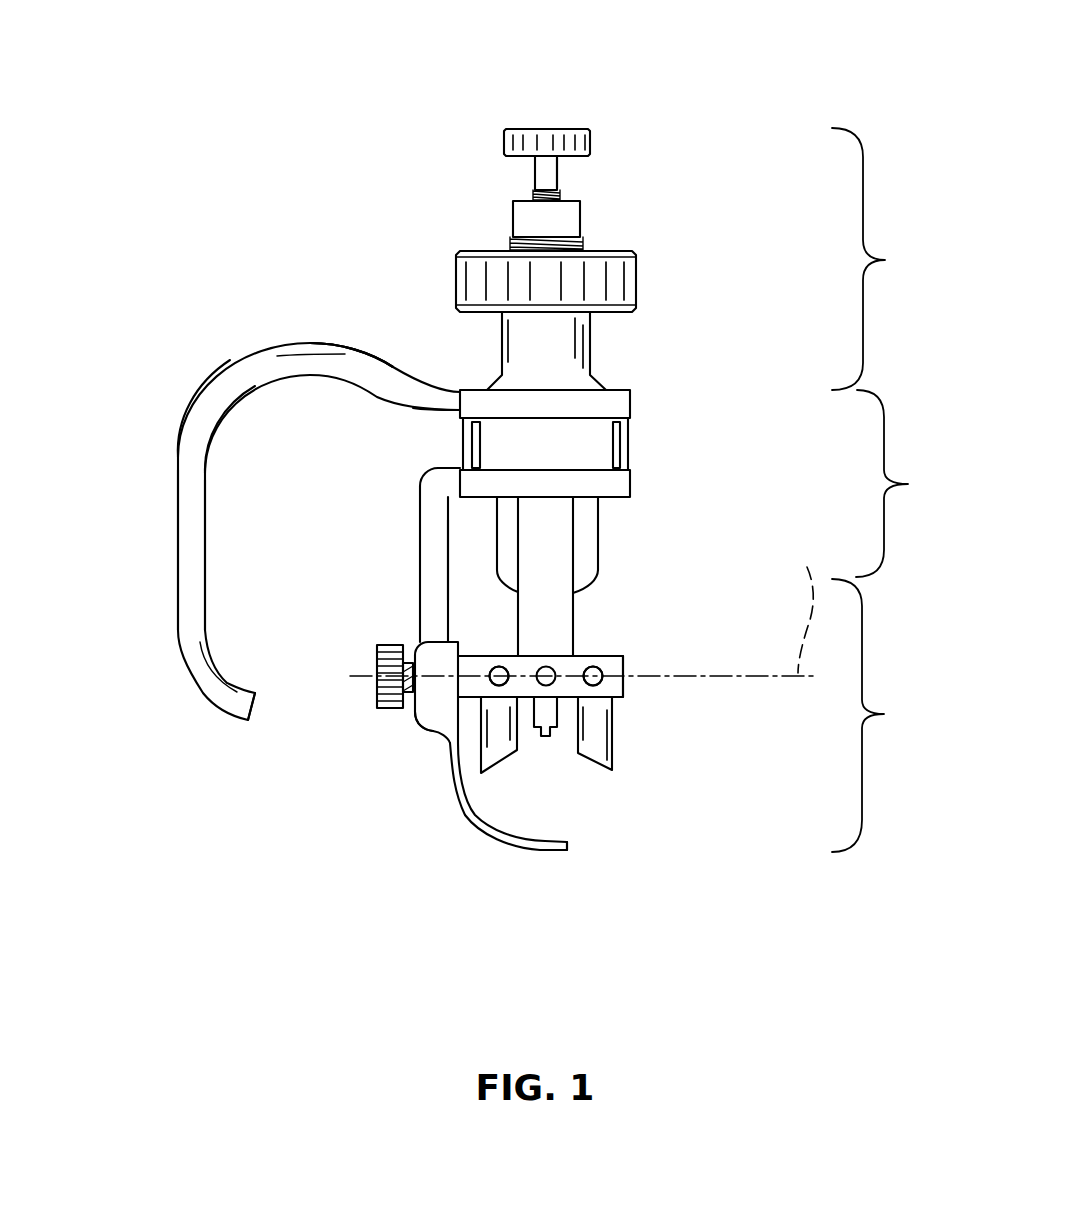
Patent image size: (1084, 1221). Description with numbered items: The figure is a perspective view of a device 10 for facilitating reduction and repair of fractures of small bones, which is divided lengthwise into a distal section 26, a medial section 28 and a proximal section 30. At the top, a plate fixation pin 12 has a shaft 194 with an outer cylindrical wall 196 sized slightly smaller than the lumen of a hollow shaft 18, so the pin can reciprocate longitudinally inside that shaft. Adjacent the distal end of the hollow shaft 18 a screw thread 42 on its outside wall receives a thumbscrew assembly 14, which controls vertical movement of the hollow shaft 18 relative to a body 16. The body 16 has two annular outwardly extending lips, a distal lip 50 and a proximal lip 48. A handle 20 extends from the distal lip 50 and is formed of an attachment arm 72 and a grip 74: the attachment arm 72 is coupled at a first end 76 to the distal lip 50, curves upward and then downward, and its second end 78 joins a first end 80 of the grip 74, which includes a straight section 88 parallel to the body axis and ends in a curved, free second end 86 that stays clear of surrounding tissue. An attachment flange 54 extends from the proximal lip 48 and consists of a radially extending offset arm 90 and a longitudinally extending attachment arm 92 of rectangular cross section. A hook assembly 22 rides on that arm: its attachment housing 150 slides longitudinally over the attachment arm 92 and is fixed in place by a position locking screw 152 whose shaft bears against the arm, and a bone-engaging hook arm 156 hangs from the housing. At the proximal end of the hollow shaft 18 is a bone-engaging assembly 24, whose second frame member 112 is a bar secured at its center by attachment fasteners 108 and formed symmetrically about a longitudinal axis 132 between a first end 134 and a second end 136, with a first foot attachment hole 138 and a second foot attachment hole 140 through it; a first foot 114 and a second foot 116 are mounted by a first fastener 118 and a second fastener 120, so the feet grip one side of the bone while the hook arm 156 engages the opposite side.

The device for facilitating reduction and repair of fractures of small bones 10 is at (685, 88).
The plate fixation pin 12 is at (499, 126).
The thumbscrew assembly 14 is at (659, 280).
The body 16 is at (632, 398).
The hollow shaft 18 is at (594, 607).
The handle 20 is at (243, 355).
The hook assembly 22 is at (445, 765).
The bone-engaging assembly 24 is at (636, 657).
The distal section 26 is at (880, 259).
The medial section 28 is at (904, 483).
The proximal section 30 is at (880, 715).
The screw thread 42 is at (583, 242).
The proximal lip 48 is at (632, 488).
The distal lip 50 is at (470, 399).
The attachment flange 54 is at (420, 567).
The attachment arm 72 is at (355, 343).
The grip 74 is at (207, 552).
The first end 76 is at (458, 410).
The second end 78 is at (187, 422).
The first end 80 is at (265, 393).
The second end 86 is at (238, 723).
The straight section 88 is at (178, 520).
The offset arm 90 is at (447, 468).
The attachment arm 92 is at (450, 543).
The attachment fasteners 108 is at (551, 667).
The second frame member 112 is at (623, 690).
The first foot 114 is at (600, 772).
The second foot 116 is at (500, 748).
The first fastener 118 is at (585, 698).
The second fastener 120 is at (495, 685).
The longitudinal axis 132 is at (807, 602).
The first end 134 is at (602, 680).
The second end 136 is at (405, 707).
The first foot attachment hole 138 is at (598, 685).
The second foot attachment hole 140 is at (491, 667).
The attachment housing 150 is at (427, 728).
The position locking screw 152 is at (390, 644).
The bone-engaging hook arm 156 is at (548, 851).
The shaft 194 is at (557, 174).
The outer cylindrical wall 196 is at (537, 176).